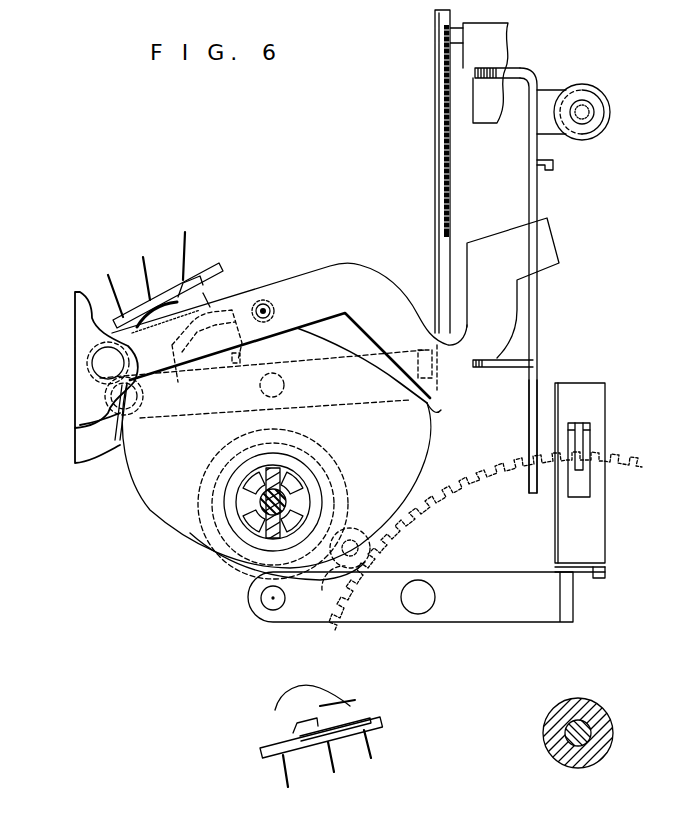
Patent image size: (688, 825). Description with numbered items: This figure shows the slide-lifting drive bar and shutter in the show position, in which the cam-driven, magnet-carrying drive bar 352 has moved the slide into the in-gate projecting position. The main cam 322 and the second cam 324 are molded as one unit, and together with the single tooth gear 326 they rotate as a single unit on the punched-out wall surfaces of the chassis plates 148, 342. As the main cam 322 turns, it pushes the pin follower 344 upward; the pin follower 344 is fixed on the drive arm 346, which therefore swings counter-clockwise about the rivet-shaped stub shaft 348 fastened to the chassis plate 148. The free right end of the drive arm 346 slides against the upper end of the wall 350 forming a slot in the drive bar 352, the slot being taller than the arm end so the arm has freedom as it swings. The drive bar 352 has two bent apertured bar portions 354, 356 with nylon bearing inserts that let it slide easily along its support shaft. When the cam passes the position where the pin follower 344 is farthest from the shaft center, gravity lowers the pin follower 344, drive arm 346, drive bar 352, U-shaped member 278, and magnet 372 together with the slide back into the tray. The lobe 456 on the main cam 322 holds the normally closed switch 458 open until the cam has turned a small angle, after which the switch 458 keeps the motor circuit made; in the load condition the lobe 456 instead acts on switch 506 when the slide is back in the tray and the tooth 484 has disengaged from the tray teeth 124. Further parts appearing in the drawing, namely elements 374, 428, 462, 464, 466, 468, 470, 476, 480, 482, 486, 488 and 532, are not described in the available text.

The tray teeth 124 is at (630, 466).
The chassis plate 148 is at (80, 337).
The U-shaped member 278 is at (552, 97).
The main cam 322 is at (410, 453).
The second cam 324 is at (233, 570).
The single tooth gear 326 is at (336, 464).
The chassis plate 342 is at (82, 441).
The pin follower 344 is at (268, 300).
The drive arm 346 is at (348, 265).
The rivet-shaped stub shaft 348 is at (108, 367).
The wall forming slot 350 is at (533, 208).
The drive bar 352 is at (543, 280).
The bent apertured bar portion 354 is at (506, 76).
The bent apertured bar portion 356 is at (510, 368).
The magnet 372 is at (598, 94).
The roller 374 is at (270, 602).
The rod 428 is at (529, 430).
The lobe 456 is at (228, 300).
The switch 458 is at (173, 256).
The link 462 is at (273, 373).
The hook 464 is at (432, 406).
The hidden circle 466 is at (124, 412).
The rod 468 is at (444, 171).
The toothed strip 470 is at (452, 160).
The base frame 476 is at (512, 606).
The lip 480 is at (594, 574).
The bracket 482 is at (590, 523).
The tooth 484 is at (577, 445).
The gear 486 is at (340, 596).
The pinion 488 is at (348, 512).
The switch 506 is at (330, 732).
The clip 532 is at (553, 161).